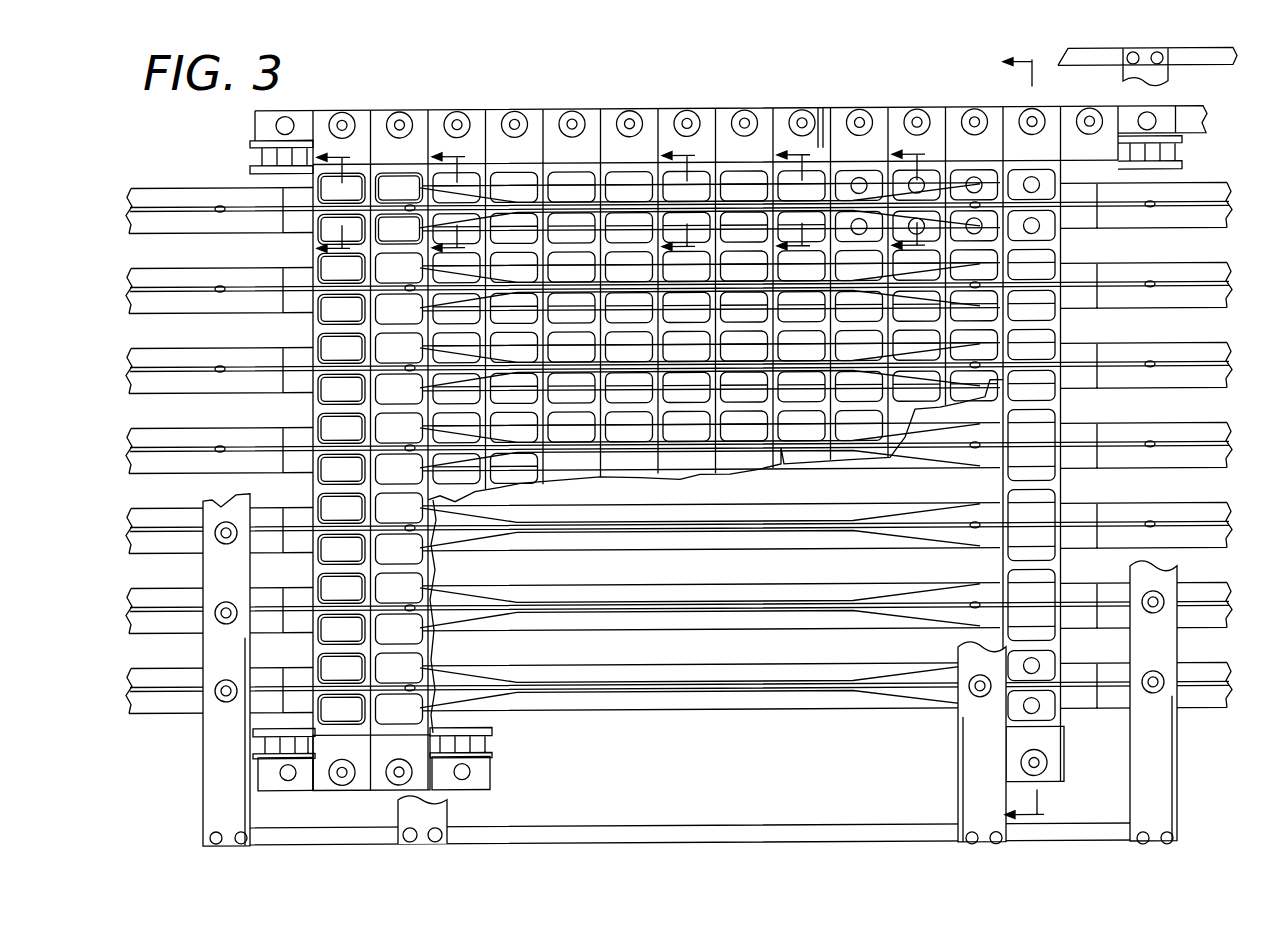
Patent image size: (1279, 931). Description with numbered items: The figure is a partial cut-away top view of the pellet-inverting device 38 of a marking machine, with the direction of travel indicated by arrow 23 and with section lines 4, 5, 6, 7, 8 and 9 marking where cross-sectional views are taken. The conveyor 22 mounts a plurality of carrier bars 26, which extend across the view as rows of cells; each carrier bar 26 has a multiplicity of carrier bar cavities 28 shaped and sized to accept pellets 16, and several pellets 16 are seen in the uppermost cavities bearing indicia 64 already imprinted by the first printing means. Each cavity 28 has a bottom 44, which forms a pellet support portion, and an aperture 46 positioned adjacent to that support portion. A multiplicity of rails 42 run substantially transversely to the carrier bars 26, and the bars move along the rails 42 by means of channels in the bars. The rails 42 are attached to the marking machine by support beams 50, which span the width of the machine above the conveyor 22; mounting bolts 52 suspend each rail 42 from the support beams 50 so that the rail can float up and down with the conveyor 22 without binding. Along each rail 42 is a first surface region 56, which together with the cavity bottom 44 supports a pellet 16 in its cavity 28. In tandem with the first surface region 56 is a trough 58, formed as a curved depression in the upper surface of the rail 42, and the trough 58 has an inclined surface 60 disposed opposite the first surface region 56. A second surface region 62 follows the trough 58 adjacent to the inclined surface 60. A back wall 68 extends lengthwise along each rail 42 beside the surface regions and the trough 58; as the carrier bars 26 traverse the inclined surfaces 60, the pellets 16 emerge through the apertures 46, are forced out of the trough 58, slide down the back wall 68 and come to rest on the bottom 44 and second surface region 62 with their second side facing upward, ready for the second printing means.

The section line 4- 4 is at (1035, 437).
The section line 5- 5 is at (891, 197).
The section line 6- 6 is at (775, 198).
The section line 7- 7 is at (661, 198).
The section line 8- 8 is at (430, 204).
The section line 9- 9 is at (321, 200).
The pellets 16 is at (388, 180).
The conveyor 22 is at (302, 118).
The direction of travel 23 is at (793, 97).
The carrier bars 26 is at (497, 112).
The carrier bar cavities 28 is at (728, 109).
The pellet-inverting device 38 is at (527, 104).
The rail 42 is at (880, 700).
The bottom 44 is at (1098, 255).
The aperture 46 is at (1103, 270).
The support beams 50 is at (210, 778).
The mounting bolts 52 is at (220, 700).
The first surface region 56 is at (1080, 268).
The trough 58 is at (797, 690).
The inclined surface 60 is at (548, 703).
The second surface region 62 is at (290, 225).
The indicia 64 is at (1095, 178).
The back wall 68 is at (712, 686).